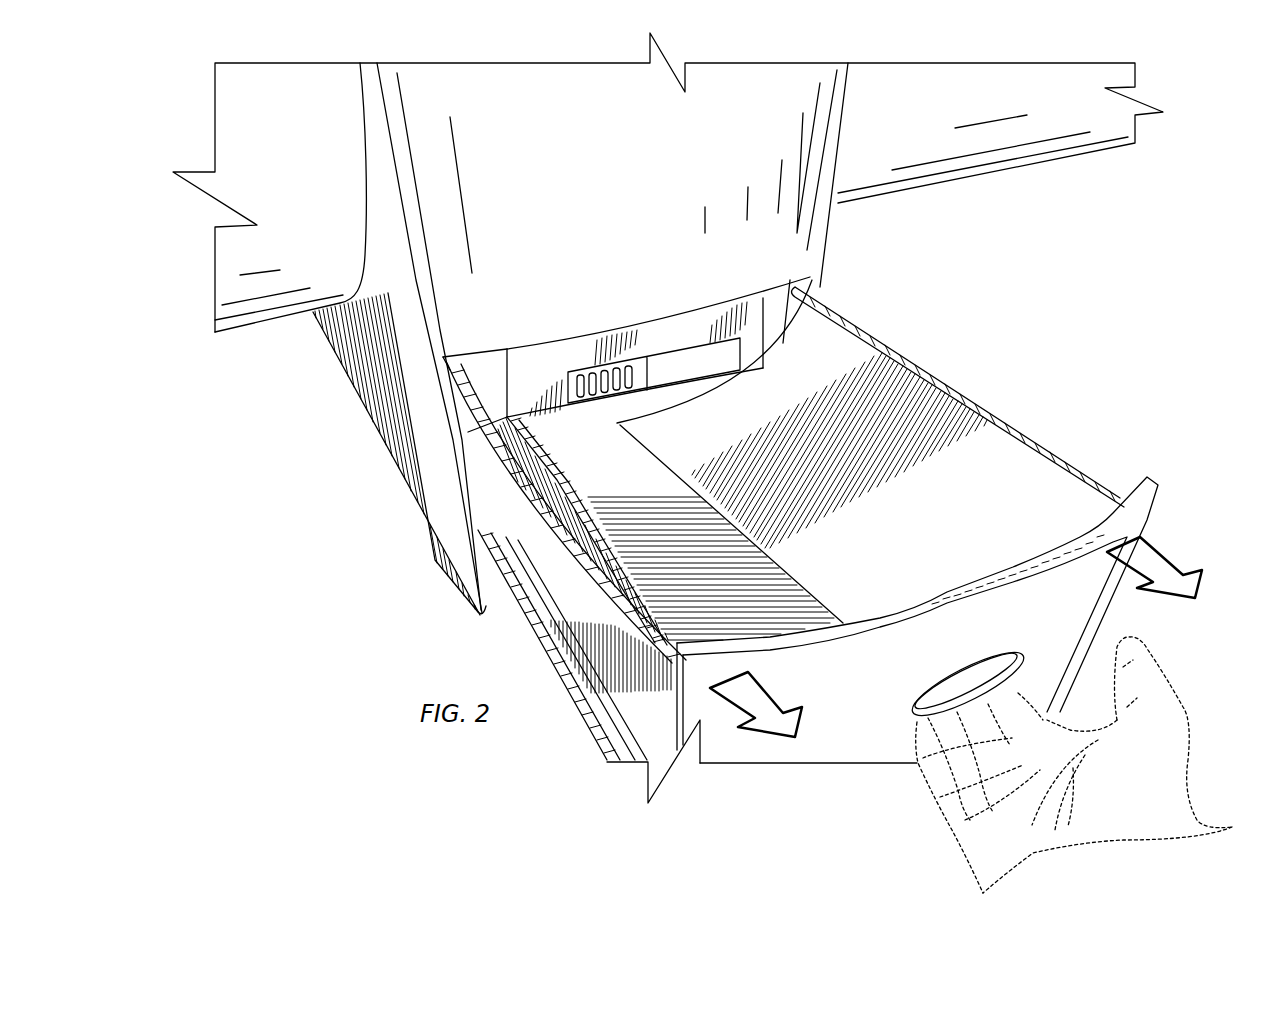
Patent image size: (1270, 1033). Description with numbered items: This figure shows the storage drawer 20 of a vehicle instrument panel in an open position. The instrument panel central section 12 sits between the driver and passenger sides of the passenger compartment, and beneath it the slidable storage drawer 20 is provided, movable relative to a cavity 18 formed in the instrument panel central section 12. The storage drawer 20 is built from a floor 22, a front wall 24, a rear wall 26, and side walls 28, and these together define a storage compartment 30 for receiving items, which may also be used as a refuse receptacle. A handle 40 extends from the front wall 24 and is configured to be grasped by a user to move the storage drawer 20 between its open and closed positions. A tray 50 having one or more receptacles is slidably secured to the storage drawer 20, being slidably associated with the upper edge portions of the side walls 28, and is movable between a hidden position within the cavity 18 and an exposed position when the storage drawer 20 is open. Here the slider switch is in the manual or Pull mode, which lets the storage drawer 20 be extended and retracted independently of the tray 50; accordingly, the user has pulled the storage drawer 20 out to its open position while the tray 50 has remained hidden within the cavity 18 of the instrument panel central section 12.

The instrument panel central section 12 is at (723, 193).
The cavity 18 is at (477, 470).
The storage drawer 20 is at (851, 721).
The floor 22 is at (667, 390).
The front wall 24 is at (1070, 580).
The rear wall 26 is at (812, 335).
The side walls 28 is at (880, 404).
The storage compartment 30 is at (904, 508).
The handle 40 is at (968, 690).
The tray 50 is at (757, 327).